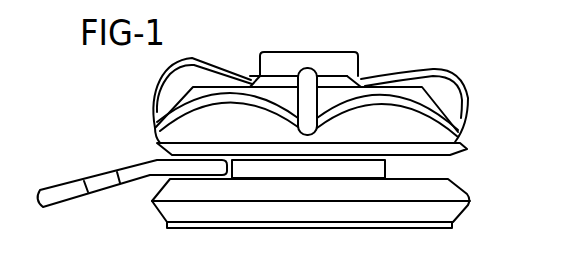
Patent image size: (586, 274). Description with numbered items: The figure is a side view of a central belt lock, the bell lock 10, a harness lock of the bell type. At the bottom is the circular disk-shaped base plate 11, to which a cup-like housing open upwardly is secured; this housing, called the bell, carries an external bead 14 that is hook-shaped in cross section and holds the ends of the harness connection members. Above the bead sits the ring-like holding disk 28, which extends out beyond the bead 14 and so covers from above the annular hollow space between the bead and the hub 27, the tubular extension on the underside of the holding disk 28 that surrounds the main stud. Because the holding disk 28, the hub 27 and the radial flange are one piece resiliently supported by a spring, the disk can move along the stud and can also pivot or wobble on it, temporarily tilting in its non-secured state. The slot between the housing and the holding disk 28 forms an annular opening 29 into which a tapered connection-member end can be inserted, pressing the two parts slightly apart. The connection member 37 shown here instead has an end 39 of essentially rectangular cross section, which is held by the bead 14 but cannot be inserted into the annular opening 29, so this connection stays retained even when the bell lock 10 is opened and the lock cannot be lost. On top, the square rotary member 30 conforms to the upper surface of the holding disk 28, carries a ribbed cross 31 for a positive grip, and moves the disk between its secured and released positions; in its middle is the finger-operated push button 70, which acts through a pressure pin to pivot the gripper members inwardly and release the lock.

The bell lock 10 is at (123, 150).
The base plate 11 is at (321, 227).
The external bead 14 is at (453, 195).
The hub 27 is at (365, 170).
The holding disk 28 is at (228, 123).
The annular opening 29 is at (428, 170).
The rotary member 30 is at (333, 98).
The ribbed cross 31 is at (307, 70).
The connection member 37 is at (132, 202).
The end 39 is at (102, 182).
The push button 70 is at (340, 28).